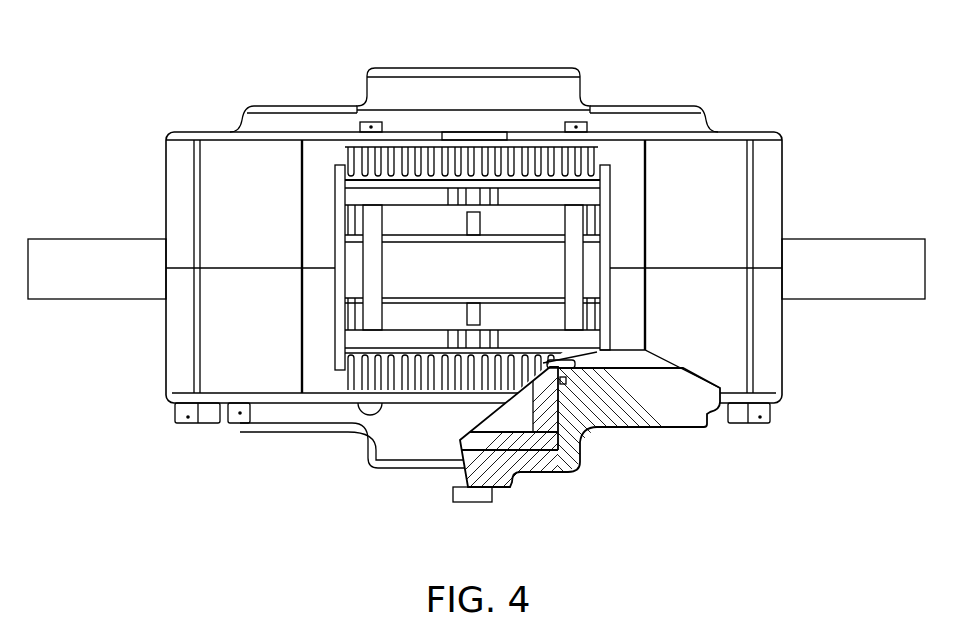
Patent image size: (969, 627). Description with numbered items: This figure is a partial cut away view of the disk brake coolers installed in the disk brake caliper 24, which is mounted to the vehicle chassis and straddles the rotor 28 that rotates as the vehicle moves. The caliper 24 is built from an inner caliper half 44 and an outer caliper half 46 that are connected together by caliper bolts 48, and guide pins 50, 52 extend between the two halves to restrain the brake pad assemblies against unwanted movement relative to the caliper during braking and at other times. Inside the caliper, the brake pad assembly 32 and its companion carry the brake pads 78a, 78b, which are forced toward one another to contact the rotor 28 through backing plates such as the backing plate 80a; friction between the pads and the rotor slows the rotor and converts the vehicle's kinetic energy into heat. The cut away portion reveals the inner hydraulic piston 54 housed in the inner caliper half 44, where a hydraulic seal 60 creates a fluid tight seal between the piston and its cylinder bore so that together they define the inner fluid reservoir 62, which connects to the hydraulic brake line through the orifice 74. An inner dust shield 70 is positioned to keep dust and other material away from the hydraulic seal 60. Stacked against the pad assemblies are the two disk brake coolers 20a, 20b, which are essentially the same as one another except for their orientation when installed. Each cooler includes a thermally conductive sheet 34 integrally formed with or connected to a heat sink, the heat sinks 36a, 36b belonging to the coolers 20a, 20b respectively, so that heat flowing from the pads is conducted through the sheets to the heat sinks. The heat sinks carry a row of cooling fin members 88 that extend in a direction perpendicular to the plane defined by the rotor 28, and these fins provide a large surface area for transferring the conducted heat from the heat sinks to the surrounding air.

The disk brake caliper 24 is at (785, 156).
The rotor 28 is at (73, 272).
The outer caliper half 46 is at (275, 120).
The guide pin 52 is at (372, 127).
The guide pin 50 is at (577, 127).
The heat sink 36b is at (538, 163).
The heat sink 36a is at (432, 383).
The cooling fin members 88 is at (422, 150).
The disk brake cooler 20b is at (603, 190).
The disk brake cooler 20a is at (598, 347).
The brake pad 78b is at (412, 217).
The brake pad 78a is at (408, 315).
The thermally conductive sheet 34 is at (499, 243).
The brake pad assembly 32 is at (500, 295).
The inner caliper half 44 is at (273, 377).
The caliper bolts 48 is at (240, 413).
The backing plate 80a is at (390, 342).
The hydraulic seal 60 is at (603, 428).
The inner fluid reservoir 62 is at (545, 413).
The inner hydraulic piston 54 is at (541, 447).
The inner dust shield 70 is at (575, 386).
The orifice 74 is at (472, 502).